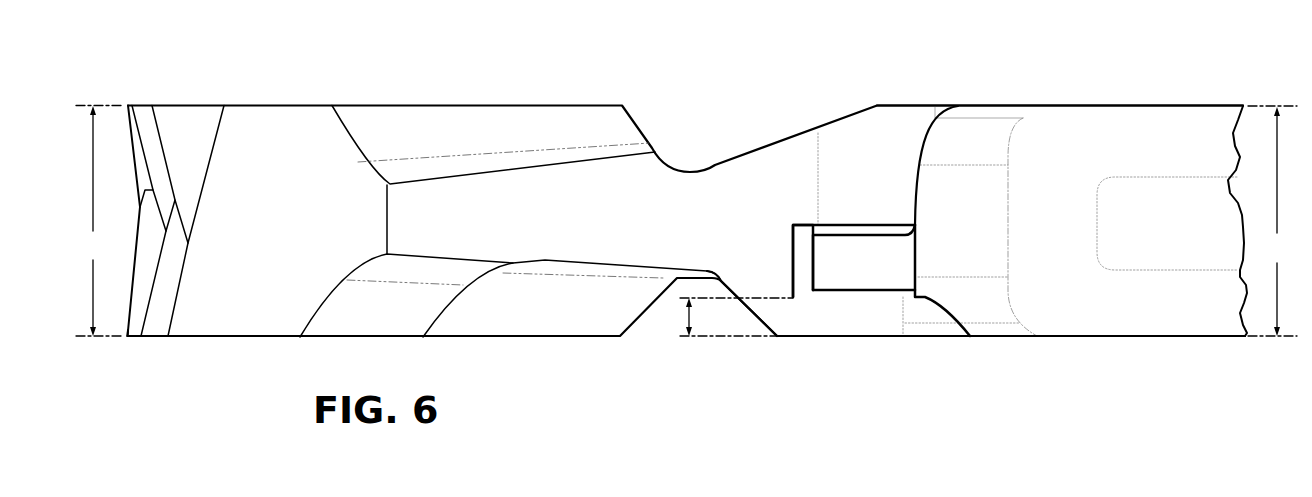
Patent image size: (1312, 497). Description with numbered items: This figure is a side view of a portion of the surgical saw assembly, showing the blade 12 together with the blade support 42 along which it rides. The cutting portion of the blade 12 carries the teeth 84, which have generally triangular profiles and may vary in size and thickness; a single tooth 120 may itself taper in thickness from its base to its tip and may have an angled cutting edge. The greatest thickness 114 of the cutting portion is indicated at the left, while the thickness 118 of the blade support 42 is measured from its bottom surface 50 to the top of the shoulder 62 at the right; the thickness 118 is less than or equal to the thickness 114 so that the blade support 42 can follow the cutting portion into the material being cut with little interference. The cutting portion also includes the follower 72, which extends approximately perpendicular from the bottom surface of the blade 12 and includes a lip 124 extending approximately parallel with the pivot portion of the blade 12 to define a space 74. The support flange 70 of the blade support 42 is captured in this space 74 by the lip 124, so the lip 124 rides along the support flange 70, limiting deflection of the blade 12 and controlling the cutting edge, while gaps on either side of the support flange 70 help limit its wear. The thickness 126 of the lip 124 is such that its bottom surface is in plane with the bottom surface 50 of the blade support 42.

The blade 12 is at (778, 105).
The teeth 84 is at (182, 106).
The tooth 120 is at (127, 337).
The blade support 42 is at (1122, 104).
The shoulder 62 is at (1198, 108).
The bottom surface 50 is at (1135, 337).
The support flange 70 is at (877, 294).
The space 74 is at (803, 288).
The follower 72 is at (775, 310).
The lip 124 is at (860, 323).
The thickness of the cutting portion 114 is at (99, 221).
The thickness of the blade support 118 is at (1272, 221).
The thickness of the projection 126 is at (688, 318).